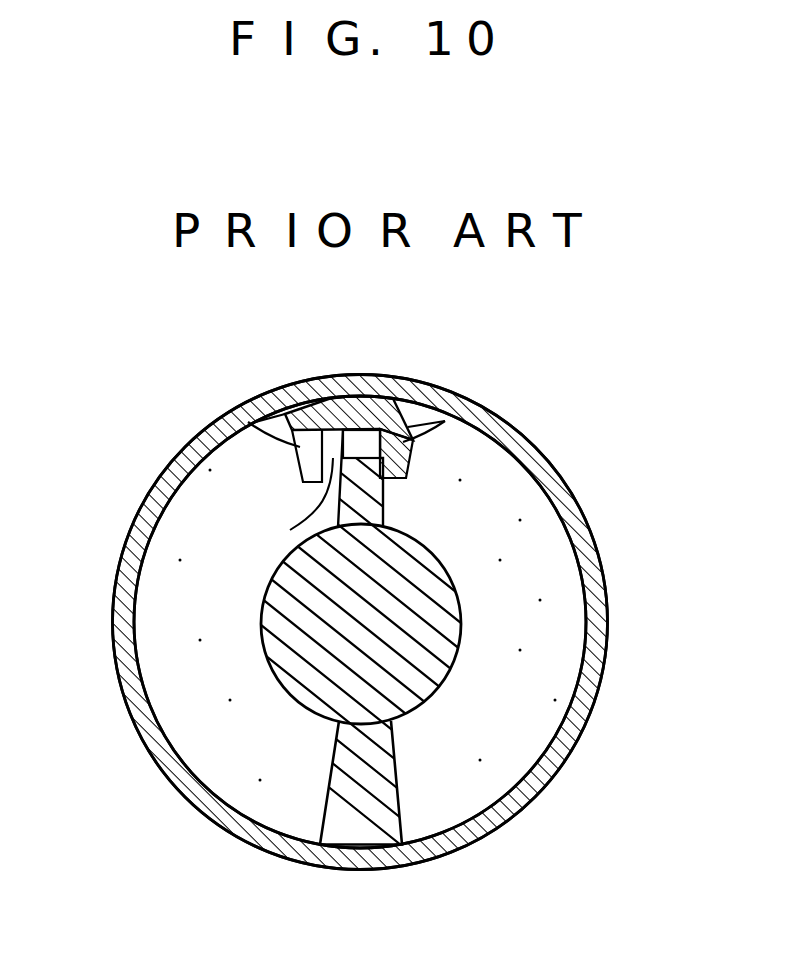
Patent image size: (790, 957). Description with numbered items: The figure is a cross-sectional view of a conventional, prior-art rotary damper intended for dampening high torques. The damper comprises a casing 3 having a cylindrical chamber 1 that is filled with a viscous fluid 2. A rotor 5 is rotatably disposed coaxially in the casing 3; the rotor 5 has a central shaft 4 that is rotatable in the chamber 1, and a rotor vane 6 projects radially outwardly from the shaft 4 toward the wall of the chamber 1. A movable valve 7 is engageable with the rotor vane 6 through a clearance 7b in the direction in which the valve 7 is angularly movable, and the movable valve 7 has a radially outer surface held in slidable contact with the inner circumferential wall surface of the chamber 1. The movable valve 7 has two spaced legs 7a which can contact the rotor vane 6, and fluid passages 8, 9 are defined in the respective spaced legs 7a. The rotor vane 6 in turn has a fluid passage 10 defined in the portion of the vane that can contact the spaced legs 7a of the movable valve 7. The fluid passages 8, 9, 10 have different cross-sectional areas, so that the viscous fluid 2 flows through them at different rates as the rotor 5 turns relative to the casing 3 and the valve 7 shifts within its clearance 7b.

The cylindrical chamber 1 is at (176, 564).
The viscous fluid 2 is at (553, 621).
The casing 3 is at (153, 742).
The central shaft 4 is at (312, 675).
The rotor 5 is at (425, 707).
The rotor vane 6 is at (376, 513).
The movable valve 7 is at (330, 403).
The spaced legs 7a is at (300, 470).
The clearance 7b is at (317, 517).
The fluid passage 8 is at (444, 422).
The fluid passage 9 is at (248, 414).
The fluid passage 10 is at (368, 442).